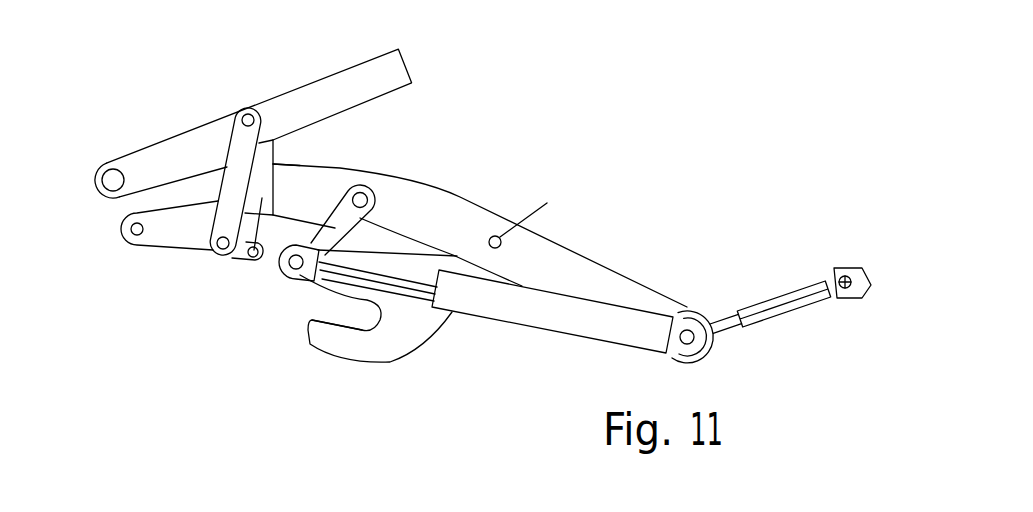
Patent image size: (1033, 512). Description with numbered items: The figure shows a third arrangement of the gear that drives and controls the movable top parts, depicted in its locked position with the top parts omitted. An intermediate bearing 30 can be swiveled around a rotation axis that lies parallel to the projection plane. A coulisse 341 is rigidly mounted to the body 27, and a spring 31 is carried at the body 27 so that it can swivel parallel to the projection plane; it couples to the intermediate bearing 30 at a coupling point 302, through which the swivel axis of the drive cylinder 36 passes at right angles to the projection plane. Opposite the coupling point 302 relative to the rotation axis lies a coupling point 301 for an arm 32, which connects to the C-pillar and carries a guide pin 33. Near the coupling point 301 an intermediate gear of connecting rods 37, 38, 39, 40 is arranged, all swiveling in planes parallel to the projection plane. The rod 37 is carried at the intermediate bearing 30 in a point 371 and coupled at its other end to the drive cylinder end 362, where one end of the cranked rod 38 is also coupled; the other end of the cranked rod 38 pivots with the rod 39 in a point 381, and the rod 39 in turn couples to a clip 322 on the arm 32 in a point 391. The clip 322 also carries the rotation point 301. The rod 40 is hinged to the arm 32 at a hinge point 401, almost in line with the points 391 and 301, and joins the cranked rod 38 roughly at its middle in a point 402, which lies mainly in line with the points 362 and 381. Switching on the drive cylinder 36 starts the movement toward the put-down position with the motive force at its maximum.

The body 27 is at (843, 270).
The intermediate bearing 30 is at (618, 277).
The coupling point 301 is at (295, 163).
The coupling point 302 is at (686, 330).
The spring 31 is at (753, 308).
The arm 32 is at (322, 83).
The clip 322 is at (246, 256).
The guide pin 33 is at (110, 182).
The coulisse 341 is at (363, 327).
The drive cylinder 36 is at (540, 320).
The drive cylinder end 362 is at (292, 273).
The connecting rod 37 is at (362, 220).
The point 371 is at (370, 194).
The cranked rod 38 is at (173, 232).
The point 381 is at (131, 231).
The connecting rod 39 is at (200, 250).
The point 391 is at (258, 250).
The connecting rod 40 is at (232, 167).
The hinge point 401 is at (248, 114).
The point 402 is at (238, 257).